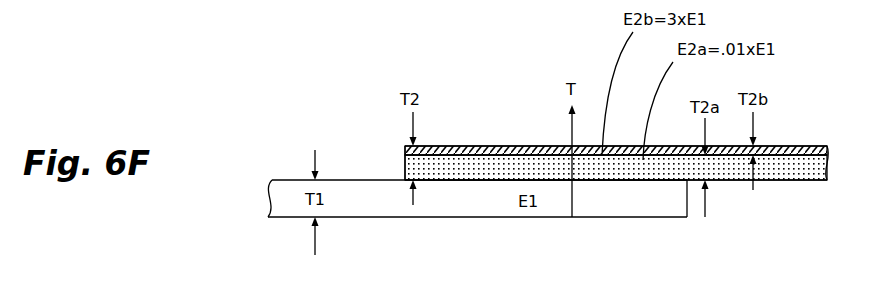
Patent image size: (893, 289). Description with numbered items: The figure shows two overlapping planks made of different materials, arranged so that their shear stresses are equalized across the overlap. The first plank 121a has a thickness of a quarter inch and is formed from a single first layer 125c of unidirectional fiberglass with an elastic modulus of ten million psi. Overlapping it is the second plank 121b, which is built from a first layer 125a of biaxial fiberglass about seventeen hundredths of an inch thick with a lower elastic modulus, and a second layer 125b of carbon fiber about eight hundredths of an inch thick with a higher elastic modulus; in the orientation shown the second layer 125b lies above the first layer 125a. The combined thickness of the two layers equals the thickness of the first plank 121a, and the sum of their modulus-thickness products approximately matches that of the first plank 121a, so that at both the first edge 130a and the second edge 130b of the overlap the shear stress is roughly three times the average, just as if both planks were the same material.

The first plank 121a is at (462, 227).
The second plank 121b is at (628, 143).
The first layer 125a is at (797, 181).
The second layer 125b is at (628, 113).
The first layer 125c is at (625, 218).
The first edge 130a is at (472, 218).
The second edge 130b is at (540, 146).